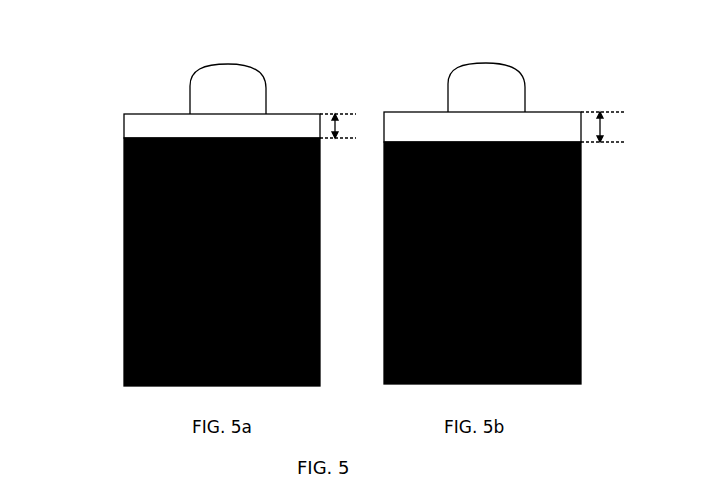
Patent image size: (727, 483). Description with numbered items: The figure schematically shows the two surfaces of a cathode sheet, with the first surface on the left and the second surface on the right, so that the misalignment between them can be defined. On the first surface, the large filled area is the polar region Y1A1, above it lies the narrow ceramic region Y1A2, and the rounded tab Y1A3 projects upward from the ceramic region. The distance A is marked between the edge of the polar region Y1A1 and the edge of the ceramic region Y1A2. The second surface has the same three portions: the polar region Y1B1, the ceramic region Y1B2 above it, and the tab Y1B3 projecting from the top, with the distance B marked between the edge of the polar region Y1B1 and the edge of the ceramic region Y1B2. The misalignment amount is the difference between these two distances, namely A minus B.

In FIG. 5a, the polar region of the first surface of the cathode sheet Y1A1 is at (116, 208).
In FIG. 5a, the ceramic region of the first surface of the cathode sheet Y1A2 is at (116, 116).
In FIG. 5a, the tab of the first surface of the cathode sheet Y1A3 is at (182, 92).
In FIG. 5a, the distance from the edge of the polar region to the edge of the ceramic region on A is at (338, 126).
In FIG. 5b, the polar region of the second surface of the cathode sheet Y1B1 is at (573, 282).
In FIG. 5b, the ceramic region of the second surface of the cathode sheet Y1B2 is at (543, 118).
In FIG. 5b, the tab of the second surface of the cathode sheet Y1B3 is at (518, 78).
In FIG. 5b, the distance from the edge of the polar region to the edge of the ceramic region on B is at (602, 127).